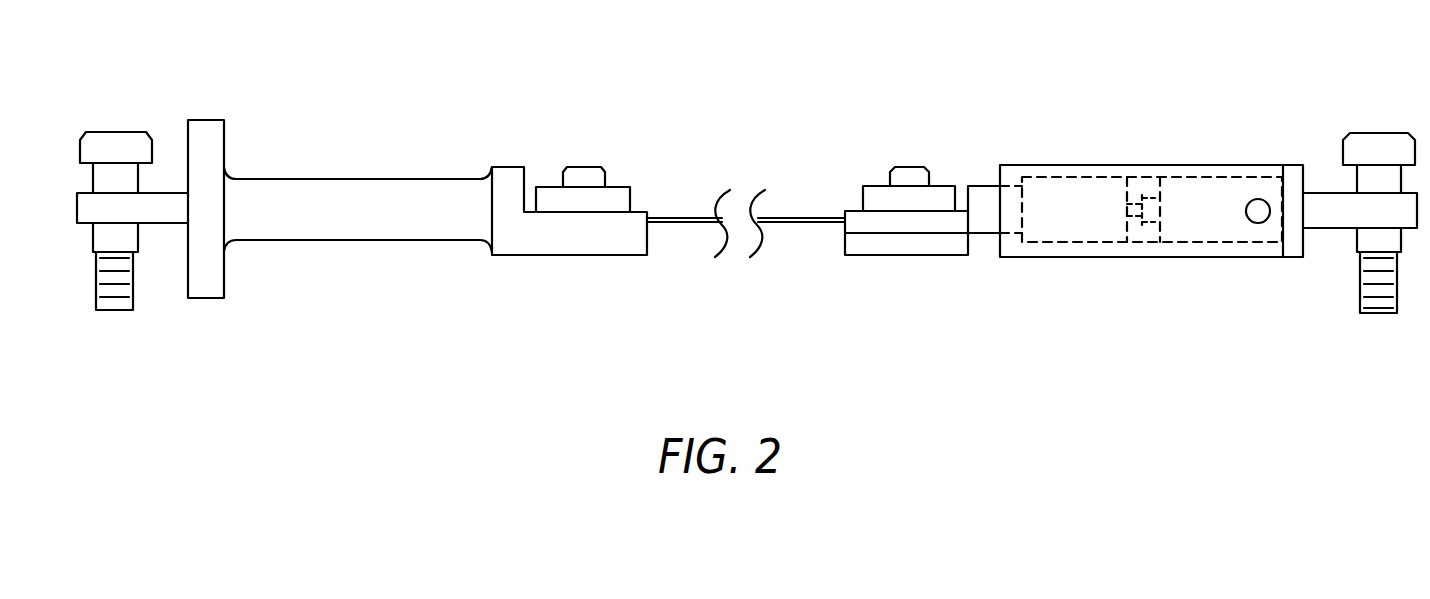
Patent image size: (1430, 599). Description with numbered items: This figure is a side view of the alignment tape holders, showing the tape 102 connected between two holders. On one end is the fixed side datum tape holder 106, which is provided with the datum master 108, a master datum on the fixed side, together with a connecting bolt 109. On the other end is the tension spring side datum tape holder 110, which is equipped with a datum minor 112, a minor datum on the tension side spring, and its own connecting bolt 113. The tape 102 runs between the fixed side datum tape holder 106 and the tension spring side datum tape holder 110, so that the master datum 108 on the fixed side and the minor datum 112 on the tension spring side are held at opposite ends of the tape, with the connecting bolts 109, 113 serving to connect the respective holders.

The tape 102 is at (671, 224).
The fixed side datum tape holder 106 is at (308, 178).
The datum master 108 is at (113, 131).
The connecting bolt 109 is at (574, 166).
The tension spring side datum tape holder 110 is at (1153, 165).
The datum minor 112 is at (1380, 133).
The connecting bolt 113 is at (908, 167).